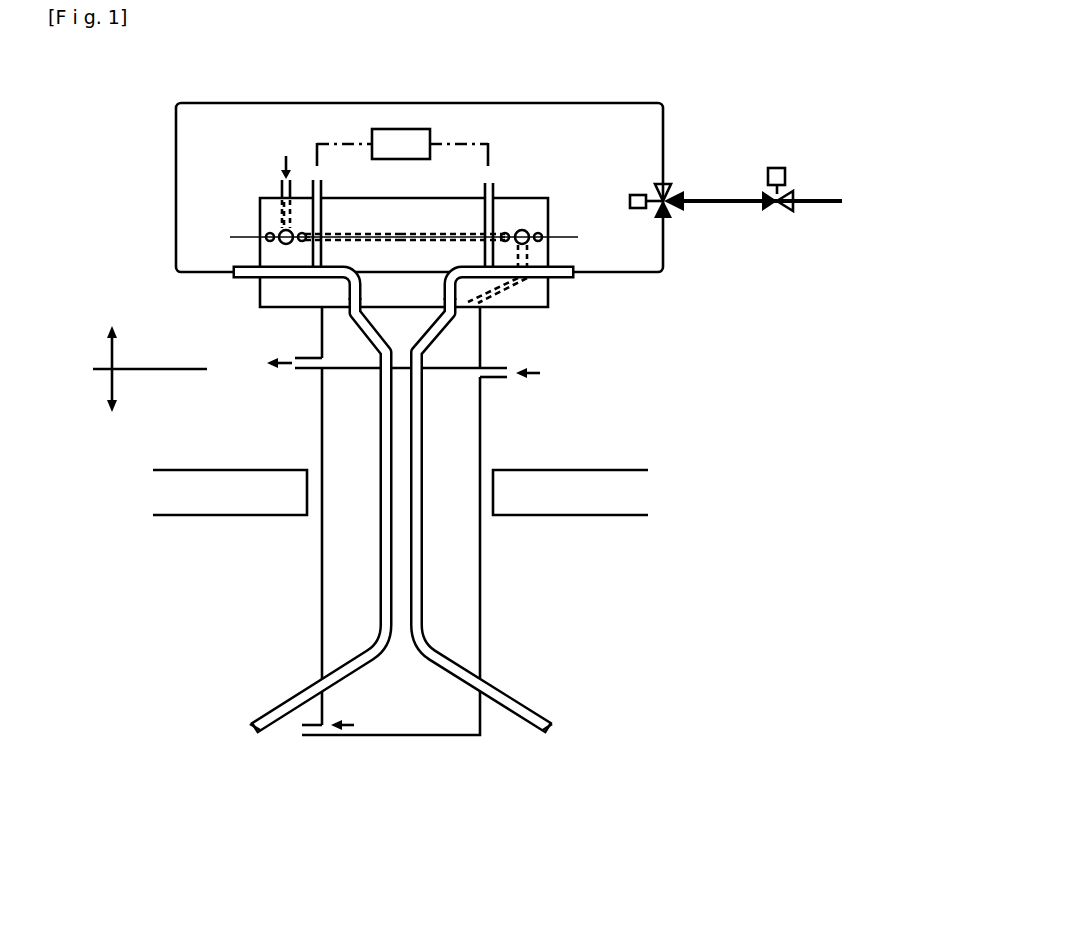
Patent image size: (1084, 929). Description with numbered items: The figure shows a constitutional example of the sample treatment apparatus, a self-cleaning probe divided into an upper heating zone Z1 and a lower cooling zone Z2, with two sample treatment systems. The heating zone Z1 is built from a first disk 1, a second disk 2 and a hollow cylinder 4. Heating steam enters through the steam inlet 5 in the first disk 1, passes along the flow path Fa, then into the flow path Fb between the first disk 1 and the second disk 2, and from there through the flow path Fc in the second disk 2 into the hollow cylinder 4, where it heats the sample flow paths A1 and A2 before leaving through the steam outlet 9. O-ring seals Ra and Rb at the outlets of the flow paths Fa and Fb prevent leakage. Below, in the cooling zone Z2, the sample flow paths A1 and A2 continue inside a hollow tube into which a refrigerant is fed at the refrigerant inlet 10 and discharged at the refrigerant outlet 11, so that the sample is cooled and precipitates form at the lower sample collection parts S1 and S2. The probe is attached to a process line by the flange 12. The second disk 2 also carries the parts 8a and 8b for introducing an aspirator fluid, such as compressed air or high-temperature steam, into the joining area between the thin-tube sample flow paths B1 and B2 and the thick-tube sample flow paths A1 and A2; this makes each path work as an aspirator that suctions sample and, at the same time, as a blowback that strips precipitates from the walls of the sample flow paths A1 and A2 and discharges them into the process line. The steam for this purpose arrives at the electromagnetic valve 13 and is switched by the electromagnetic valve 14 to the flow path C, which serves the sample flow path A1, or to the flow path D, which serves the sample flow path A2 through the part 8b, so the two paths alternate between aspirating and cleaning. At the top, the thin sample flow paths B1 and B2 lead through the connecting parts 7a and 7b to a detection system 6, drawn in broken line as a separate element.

The first disk 1 is at (550, 223).
The second disk 2 is at (550, 293).
The hollow cylinder 4 is at (483, 339).
The steam inlet 5 is at (282, 187).
The detection system 6 is at (405, 128).
The connecting part 7a is at (323, 187).
The connecting part 7b is at (493, 187).
The part for introducing a fluid for an aspirator 8a is at (235, 275).
The part for introducing a fluid for an aspirator 8b is at (572, 275).
The steam outlet 9 is at (298, 370).
The refrigerant inlet 10 is at (497, 380).
The refrigerant outlet 11 is at (307, 733).
The flange 12 is at (585, 468).
The electromagnetic valve 13 is at (785, 168).
The electromagnetic valve 14 is at (668, 190).
The sample flow path A1 is at (378, 505).
The sample flow path A2 is at (423, 505).
The sample flow path B1 is at (323, 230).
The sample flow path B2 is at (493, 218).
The flow path C is at (175, 217).
The flow path D is at (665, 245).
The flow path Fa is at (280, 212).
The flow path Fb is at (387, 228).
The flow path Fc is at (513, 292).
The O-ring seal Ra is at (260, 232).
The O-ring seal Rb is at (547, 232).
The sample collection part S1 is at (263, 732).
The sample collection part S2 is at (545, 732).
The heating zone Z1 is at (150, 334).
The cooling zone Z2 is at (112, 408).